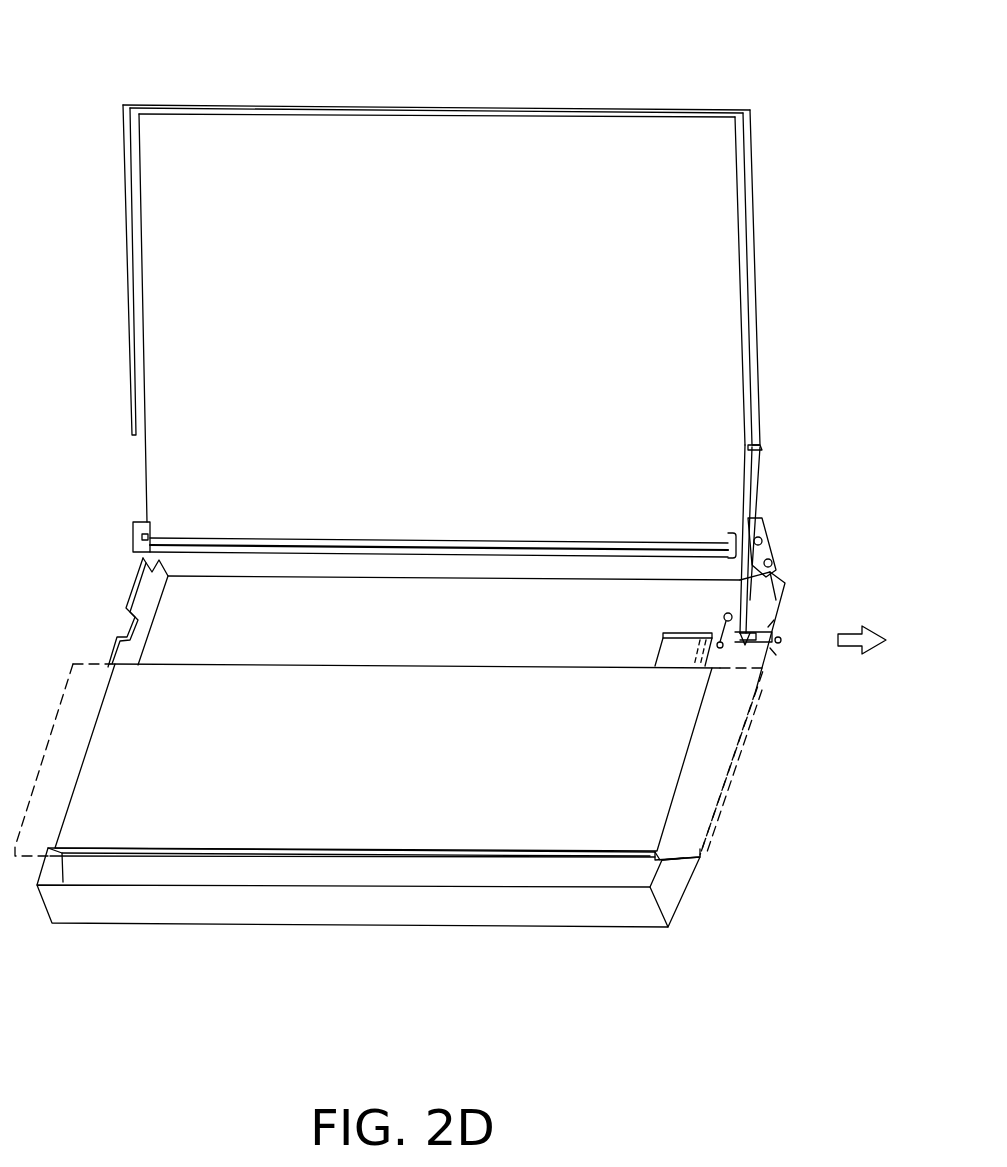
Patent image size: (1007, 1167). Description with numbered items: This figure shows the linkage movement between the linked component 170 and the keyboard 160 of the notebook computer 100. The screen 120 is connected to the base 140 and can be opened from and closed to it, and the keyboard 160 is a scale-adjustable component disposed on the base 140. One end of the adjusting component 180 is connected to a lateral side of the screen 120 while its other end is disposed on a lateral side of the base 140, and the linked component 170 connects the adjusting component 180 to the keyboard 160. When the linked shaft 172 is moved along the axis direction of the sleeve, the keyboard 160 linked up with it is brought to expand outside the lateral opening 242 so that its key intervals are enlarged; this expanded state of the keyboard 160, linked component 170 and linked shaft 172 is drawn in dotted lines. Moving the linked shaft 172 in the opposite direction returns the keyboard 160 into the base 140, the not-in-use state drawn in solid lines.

The notebook computer 100 is at (100, 36).
The screen 120 is at (695, 170).
The base 140 is at (622, 912).
The keyboard 160 is at (724, 722).
The linked component 170 is at (658, 653).
The linked shaft 172 is at (690, 632).
The adjusting component 180 is at (760, 515).
The lateral opening 242 is at (684, 869).